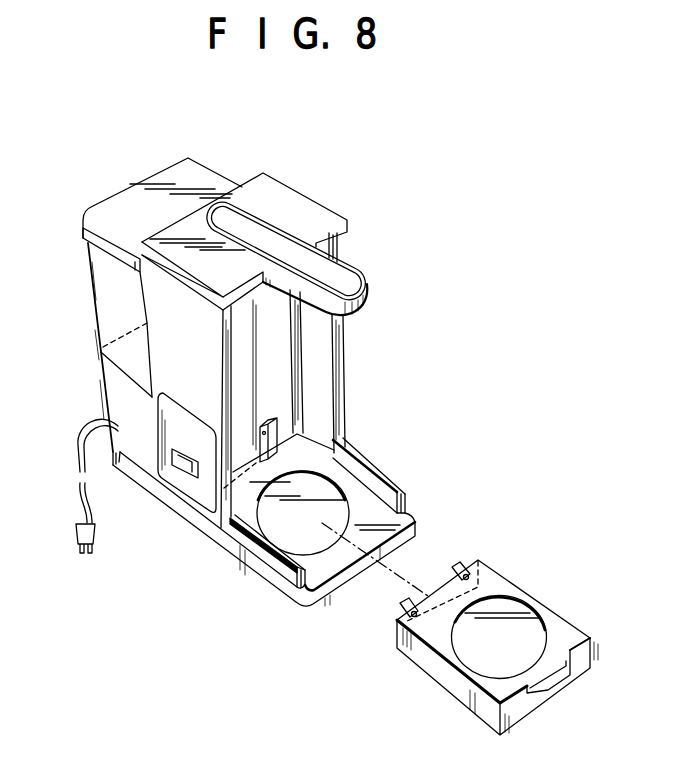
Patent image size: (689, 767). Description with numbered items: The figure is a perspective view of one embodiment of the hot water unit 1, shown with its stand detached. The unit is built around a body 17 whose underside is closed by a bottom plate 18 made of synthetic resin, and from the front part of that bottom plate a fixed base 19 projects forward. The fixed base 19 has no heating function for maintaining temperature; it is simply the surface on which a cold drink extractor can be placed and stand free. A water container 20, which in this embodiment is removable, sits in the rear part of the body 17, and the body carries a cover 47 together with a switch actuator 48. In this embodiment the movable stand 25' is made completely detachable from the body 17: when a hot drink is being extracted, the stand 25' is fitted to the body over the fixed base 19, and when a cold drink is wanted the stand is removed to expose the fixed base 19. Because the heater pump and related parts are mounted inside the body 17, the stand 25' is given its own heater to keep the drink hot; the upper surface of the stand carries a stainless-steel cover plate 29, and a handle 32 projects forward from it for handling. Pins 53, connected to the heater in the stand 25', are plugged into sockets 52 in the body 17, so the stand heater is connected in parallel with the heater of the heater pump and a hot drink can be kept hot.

The hot water unit 1 is at (345, 340).
The body 17 is at (111, 397).
The bottom plate 18 is at (174, 504).
The fixed base 19 is at (325, 500).
The water container 20 is at (99, 303).
The movable stand 25' is at (478, 625).
The cover plate 29 is at (468, 660).
The handle 32 is at (555, 683).
The cover 47 is at (307, 195).
The switch actuator 48 is at (178, 447).
The sockets 52 is at (263, 419).
The pins 53 is at (456, 566).